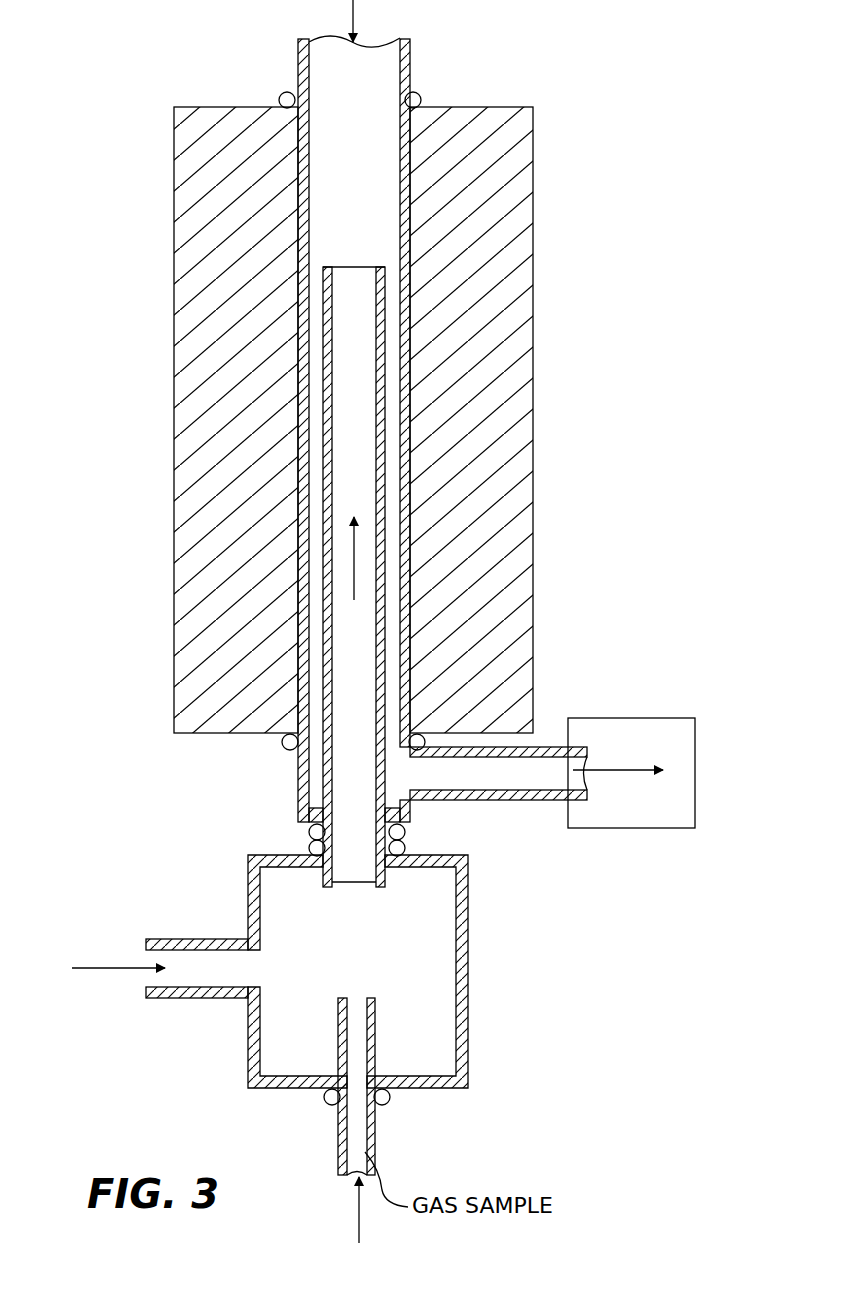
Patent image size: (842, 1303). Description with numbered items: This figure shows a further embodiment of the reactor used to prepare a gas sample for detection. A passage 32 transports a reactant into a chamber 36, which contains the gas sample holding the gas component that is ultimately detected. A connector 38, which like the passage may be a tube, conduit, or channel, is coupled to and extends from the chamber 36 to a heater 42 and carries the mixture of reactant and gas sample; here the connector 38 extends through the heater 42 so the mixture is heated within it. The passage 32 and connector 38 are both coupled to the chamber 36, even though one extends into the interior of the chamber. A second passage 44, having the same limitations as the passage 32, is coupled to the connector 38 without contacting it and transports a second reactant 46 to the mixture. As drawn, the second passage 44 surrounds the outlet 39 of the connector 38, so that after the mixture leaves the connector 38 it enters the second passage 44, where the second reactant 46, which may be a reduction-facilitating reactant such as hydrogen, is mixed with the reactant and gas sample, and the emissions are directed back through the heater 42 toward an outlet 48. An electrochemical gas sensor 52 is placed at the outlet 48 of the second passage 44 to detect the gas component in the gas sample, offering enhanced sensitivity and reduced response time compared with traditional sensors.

The passage 32 is at (205, 993).
The chamber 36 is at (462, 1030).
The connector 38 is at (405, 843).
The outlet of connector 39 is at (358, 265).
The heater 42 is at (533, 352).
The second passage 44 is at (298, 68).
The second reactant 46 is at (364, 96).
The outlet 48 is at (583, 763).
The electrochemical gas sensor 52 is at (695, 828).